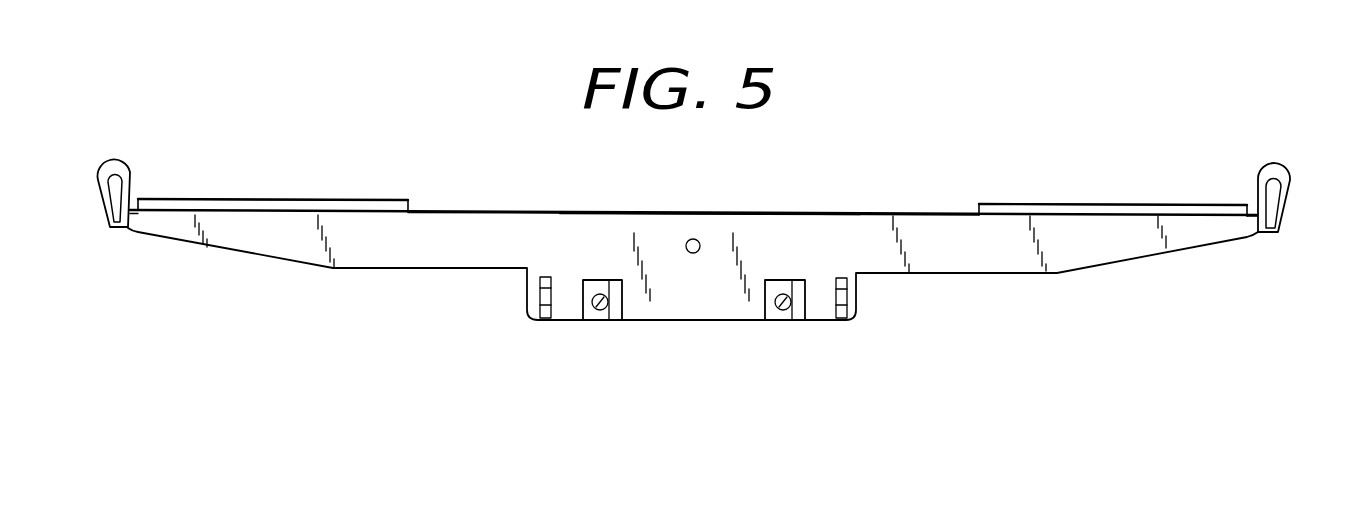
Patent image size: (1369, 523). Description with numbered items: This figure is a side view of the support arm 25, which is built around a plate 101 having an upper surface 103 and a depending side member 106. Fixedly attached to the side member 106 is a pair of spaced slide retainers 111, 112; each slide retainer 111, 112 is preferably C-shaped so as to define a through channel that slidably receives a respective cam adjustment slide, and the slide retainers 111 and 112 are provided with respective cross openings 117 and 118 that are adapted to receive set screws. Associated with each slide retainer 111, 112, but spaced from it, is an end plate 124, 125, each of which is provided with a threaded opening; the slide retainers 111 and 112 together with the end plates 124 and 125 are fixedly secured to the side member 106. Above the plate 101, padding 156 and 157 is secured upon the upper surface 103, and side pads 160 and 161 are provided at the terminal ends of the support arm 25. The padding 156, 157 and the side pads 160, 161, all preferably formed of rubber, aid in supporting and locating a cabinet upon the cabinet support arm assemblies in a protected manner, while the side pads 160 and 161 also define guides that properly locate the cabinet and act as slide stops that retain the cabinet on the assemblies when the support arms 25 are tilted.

The support arm 25 is at (881, 176).
The plate 101 is at (461, 205).
The upper surface 103 is at (620, 212).
The side member 106 is at (687, 305).
The slide retainer 111 is at (608, 322).
The slide retainer 112 is at (793, 320).
The cross opening 117 is at (599, 310).
The cross opening 118 is at (787, 310).
The end plate 124 is at (540, 307).
The end plate 125 is at (848, 308).
The padding 156 is at (213, 199).
The padding 157 is at (1082, 204).
The side pad 160 is at (108, 157).
The side pad 161 is at (1283, 165).